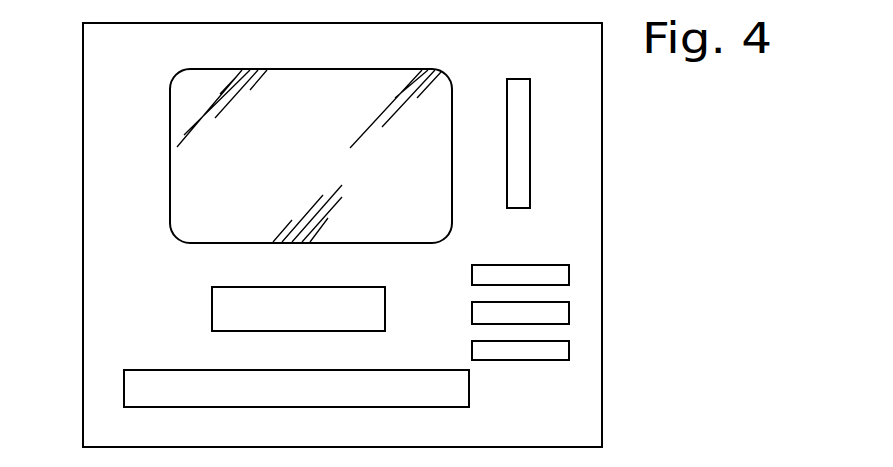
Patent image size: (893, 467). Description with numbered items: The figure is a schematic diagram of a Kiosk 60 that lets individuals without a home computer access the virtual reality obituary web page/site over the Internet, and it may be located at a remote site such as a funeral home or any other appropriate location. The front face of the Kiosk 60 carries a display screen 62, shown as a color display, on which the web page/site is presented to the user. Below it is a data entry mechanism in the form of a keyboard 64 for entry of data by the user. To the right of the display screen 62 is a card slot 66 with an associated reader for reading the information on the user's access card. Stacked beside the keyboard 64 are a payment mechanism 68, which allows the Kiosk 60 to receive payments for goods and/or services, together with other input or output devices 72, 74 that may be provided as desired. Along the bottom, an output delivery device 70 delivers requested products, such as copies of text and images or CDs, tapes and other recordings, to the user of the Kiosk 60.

The Kiosk 60 is at (596, 420).
The display screen 62 is at (170, 123).
The keyboard 64 is at (212, 297).
The card slot 66 is at (530, 152).
The payment mechanism 68 is at (562, 277).
The output delivery device 70 is at (465, 400).
The input or output device 72 is at (563, 313).
The input or output device 74 is at (558, 351).